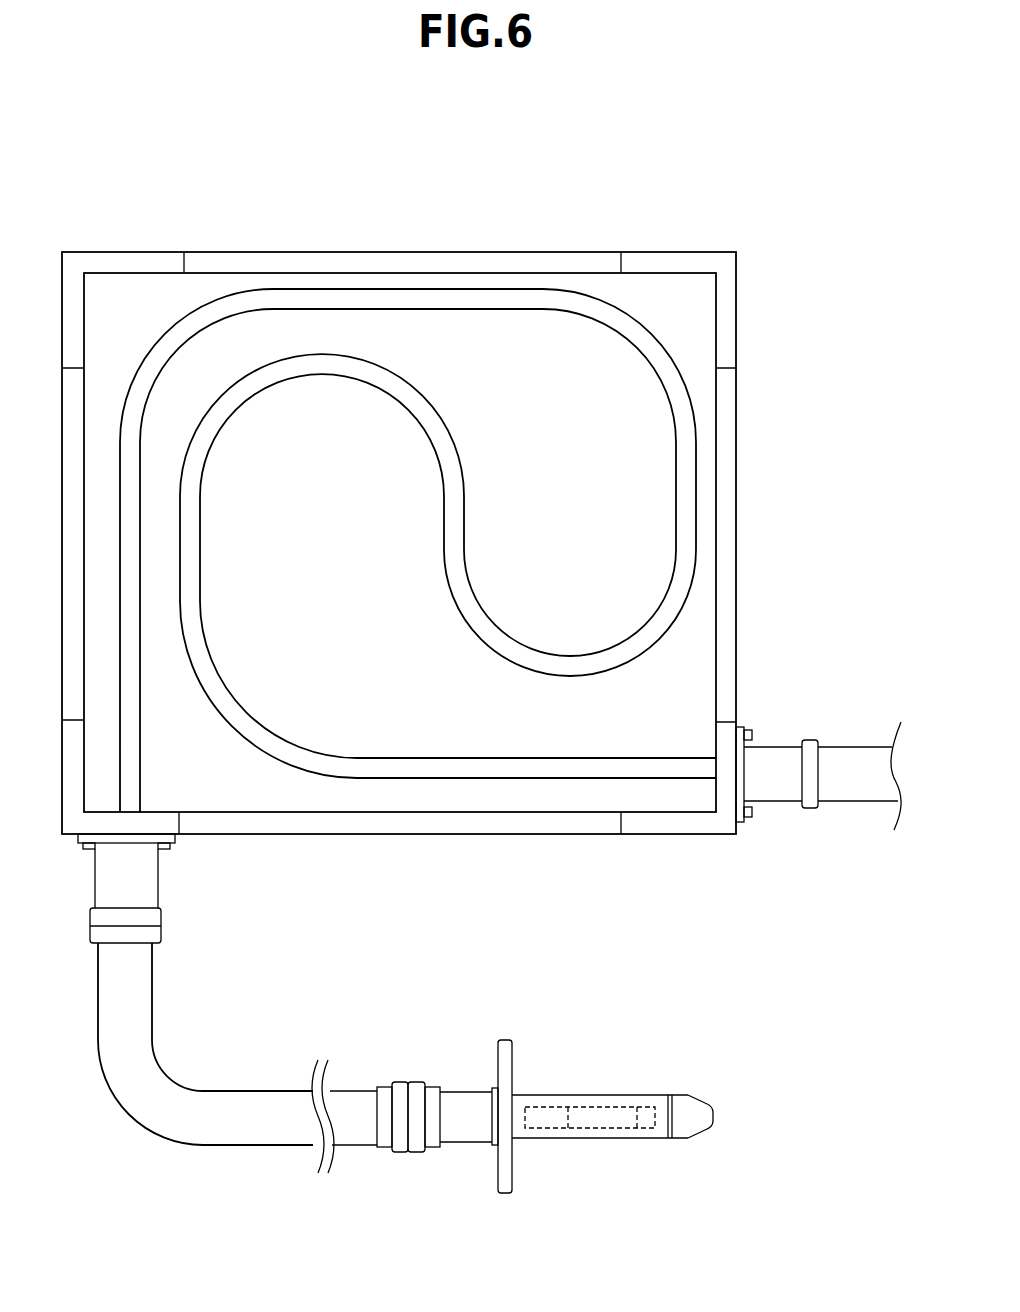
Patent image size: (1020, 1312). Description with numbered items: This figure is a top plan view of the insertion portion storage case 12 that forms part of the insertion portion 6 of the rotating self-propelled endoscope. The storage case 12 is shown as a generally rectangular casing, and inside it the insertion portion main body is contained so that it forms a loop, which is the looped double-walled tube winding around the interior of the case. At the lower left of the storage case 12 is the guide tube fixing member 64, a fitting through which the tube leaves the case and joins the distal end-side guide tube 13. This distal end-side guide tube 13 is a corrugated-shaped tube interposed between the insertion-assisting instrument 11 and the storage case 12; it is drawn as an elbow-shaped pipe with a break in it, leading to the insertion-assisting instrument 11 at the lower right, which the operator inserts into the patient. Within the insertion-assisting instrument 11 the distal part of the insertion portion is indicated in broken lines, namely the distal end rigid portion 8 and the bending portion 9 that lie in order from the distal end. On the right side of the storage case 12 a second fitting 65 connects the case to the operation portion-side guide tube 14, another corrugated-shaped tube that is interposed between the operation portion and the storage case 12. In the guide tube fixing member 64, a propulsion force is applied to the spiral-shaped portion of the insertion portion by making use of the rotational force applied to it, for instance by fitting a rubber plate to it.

The insertion portion 6 is at (357, 183).
The distal end rigid portion 8 is at (645, 1120).
The bending portion 9 is at (603, 1120).
The insertion-assisting instrument 11 is at (553, 1065).
The insertion portion storage case 12 is at (487, 252).
The distal end-side guide tube 13 is at (233, 1090).
The operation portion-side guide tube 14 is at (876, 745).
The guide tube fixing member 64 is at (158, 880).
The joint 65 is at (775, 745).